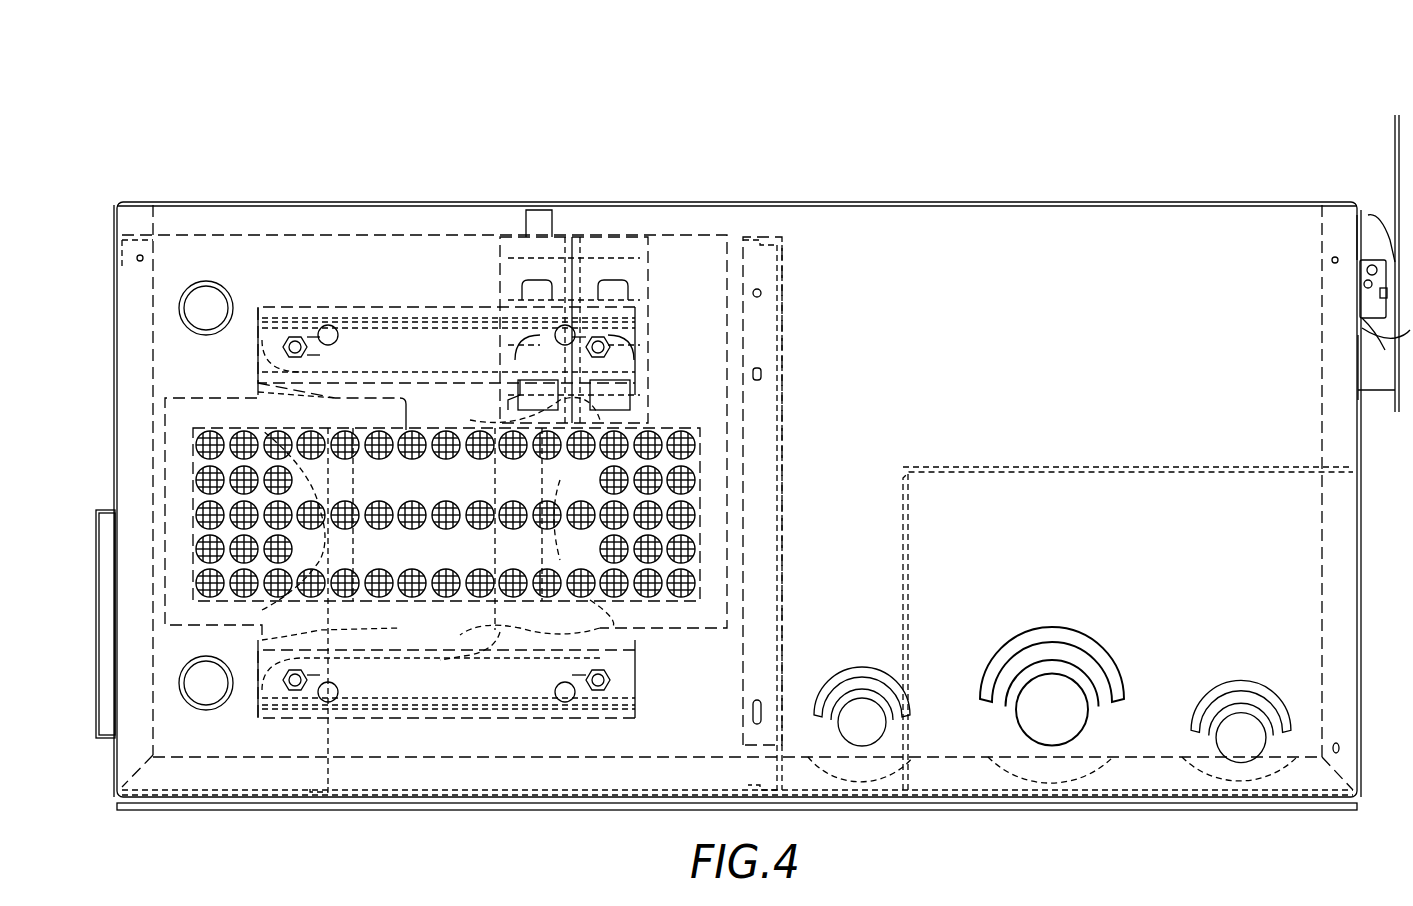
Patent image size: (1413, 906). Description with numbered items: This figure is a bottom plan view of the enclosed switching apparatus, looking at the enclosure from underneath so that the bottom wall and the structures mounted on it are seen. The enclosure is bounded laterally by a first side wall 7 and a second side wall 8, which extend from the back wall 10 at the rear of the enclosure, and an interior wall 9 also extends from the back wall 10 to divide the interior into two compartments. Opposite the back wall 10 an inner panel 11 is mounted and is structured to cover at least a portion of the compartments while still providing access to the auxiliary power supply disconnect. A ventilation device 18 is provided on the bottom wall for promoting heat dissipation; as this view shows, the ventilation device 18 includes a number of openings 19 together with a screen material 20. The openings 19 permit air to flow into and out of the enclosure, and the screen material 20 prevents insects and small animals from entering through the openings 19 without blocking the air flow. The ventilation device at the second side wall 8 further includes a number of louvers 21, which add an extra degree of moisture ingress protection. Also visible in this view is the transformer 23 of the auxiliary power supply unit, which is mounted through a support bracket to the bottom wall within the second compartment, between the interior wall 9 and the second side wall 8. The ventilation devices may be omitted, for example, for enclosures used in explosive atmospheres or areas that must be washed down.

The first side wall 7 is at (1362, 622).
The second side wall 8 is at (116, 380).
The interior wall 9 is at (790, 288).
The back wall 10 is at (996, 810).
The inner panel 11 is at (424, 236).
The ventilation device 18 is at (255, 428).
The openings 19 is at (196, 523).
The screen material 20 is at (205, 442).
The louvers 21 is at (95, 592).
The transformer 23 is at (632, 628).